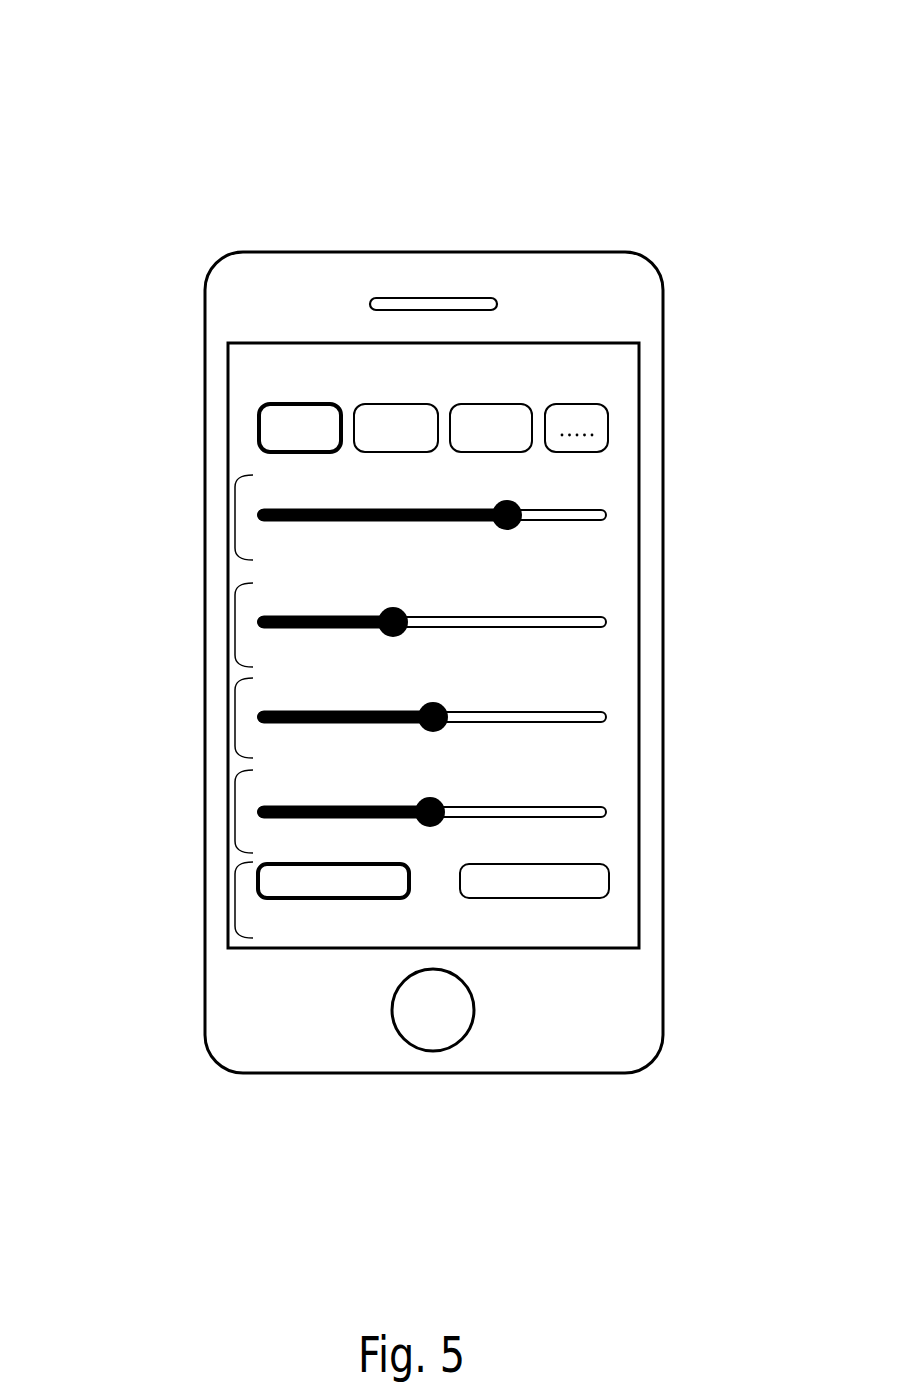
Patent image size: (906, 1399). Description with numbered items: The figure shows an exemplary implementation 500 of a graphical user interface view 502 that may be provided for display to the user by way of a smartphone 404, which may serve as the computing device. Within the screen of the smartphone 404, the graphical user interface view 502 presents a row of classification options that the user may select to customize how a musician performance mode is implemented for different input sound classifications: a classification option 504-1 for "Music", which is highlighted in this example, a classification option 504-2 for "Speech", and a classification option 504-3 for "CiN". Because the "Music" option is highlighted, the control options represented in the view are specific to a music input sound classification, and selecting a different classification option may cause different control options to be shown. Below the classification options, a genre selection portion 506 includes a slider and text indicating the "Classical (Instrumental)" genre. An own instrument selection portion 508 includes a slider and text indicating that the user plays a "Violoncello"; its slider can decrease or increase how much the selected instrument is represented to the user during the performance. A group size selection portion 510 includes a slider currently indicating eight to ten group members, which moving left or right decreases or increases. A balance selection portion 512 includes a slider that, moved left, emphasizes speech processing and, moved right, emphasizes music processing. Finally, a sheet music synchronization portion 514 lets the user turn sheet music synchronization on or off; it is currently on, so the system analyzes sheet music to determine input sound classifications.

The implementation 500 is at (104, 80).
The smartphone 404 is at (513, 252).
The graphical user interface view 502 is at (641, 645).
The classification option 504-1 is at (258, 431).
The classification option 504-2 is at (355, 407).
The classification option 504-3 is at (533, 430).
The genre selection portion 506 is at (228, 518).
The own instrument selection portion 508 is at (233, 623).
The group size selection portion 510 is at (233, 715).
The balance selection portion 512 is at (233, 812).
The sheet music synchronization portion 514 is at (233, 898).